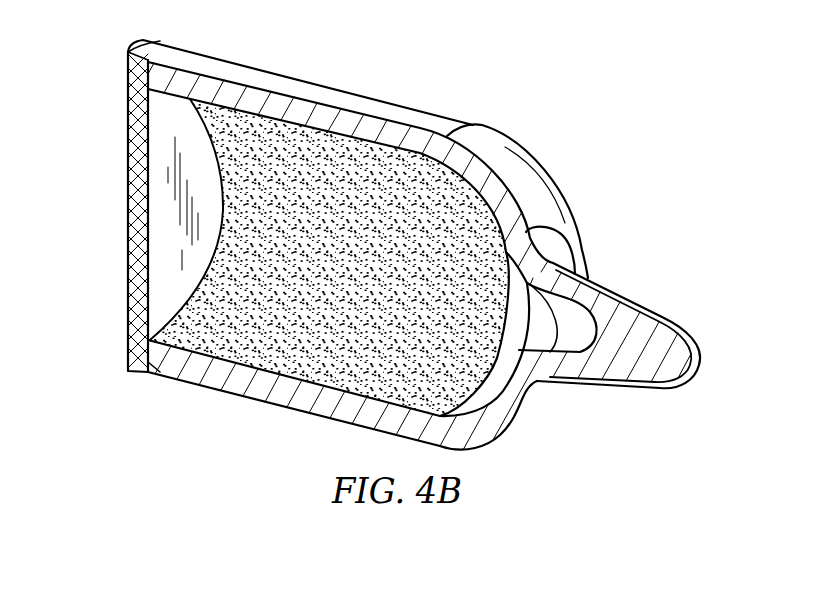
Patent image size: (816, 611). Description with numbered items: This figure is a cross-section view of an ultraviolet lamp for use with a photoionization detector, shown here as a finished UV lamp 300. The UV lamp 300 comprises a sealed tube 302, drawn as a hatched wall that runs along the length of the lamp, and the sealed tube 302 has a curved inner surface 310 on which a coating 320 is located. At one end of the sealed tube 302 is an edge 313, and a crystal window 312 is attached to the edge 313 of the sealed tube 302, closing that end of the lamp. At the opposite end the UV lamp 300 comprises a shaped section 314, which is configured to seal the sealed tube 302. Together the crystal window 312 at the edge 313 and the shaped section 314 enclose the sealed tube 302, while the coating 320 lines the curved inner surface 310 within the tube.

The UV lamp 300 is at (397, 236).
The sealed tube 302 is at (293, 75).
The curved inner surface 310 is at (377, 150).
The crystal window 312 is at (127, 158).
The edge 313 is at (178, 55).
The shaped section 314 is at (653, 310).
The coating 320 is at (338, 385).